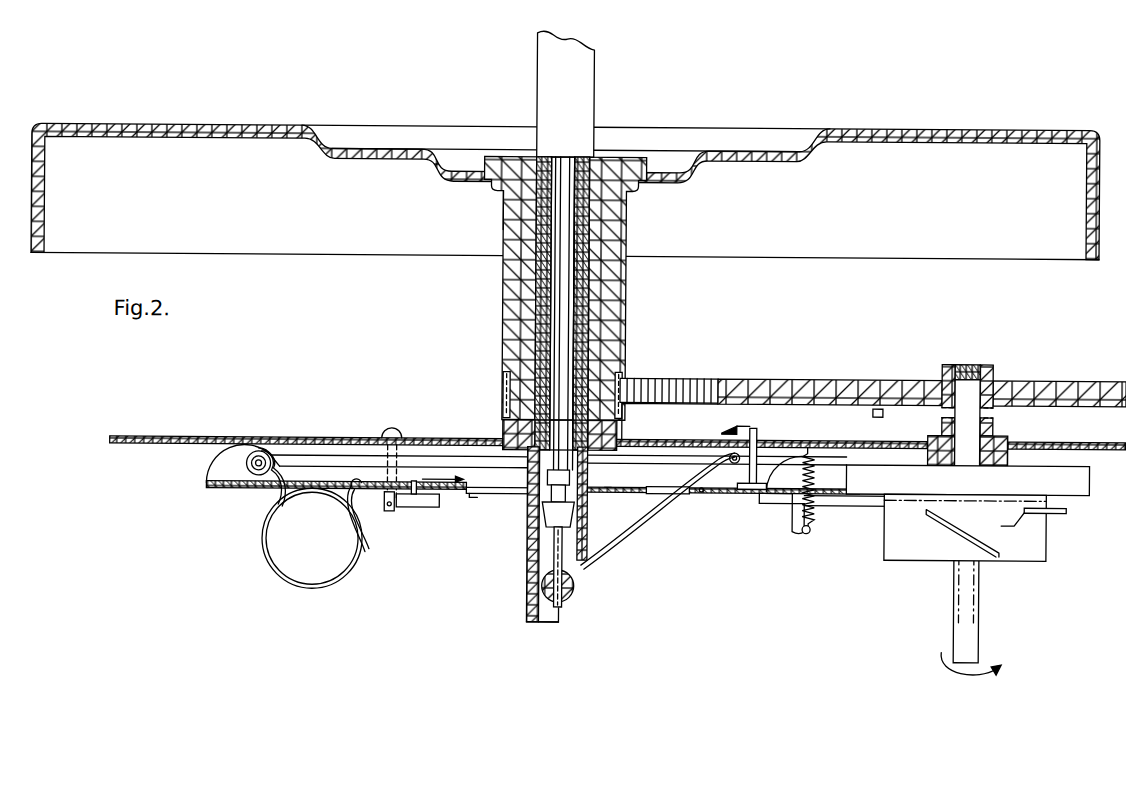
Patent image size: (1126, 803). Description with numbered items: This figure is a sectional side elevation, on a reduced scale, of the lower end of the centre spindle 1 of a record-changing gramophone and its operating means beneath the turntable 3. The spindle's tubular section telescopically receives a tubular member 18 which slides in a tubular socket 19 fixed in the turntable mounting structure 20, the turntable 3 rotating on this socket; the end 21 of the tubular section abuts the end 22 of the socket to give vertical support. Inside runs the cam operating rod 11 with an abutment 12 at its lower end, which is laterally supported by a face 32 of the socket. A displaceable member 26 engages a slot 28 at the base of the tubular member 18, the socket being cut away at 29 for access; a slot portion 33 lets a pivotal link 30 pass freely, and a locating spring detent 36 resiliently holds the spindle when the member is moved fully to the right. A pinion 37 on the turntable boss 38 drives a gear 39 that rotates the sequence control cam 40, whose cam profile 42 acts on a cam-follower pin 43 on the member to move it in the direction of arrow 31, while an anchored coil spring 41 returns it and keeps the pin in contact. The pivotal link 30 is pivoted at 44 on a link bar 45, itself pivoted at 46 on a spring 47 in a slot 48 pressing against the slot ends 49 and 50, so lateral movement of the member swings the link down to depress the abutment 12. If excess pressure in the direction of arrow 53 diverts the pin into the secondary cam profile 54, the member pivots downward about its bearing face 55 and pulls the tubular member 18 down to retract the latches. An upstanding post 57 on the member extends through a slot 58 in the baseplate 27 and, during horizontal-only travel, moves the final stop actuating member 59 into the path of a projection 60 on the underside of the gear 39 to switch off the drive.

The centre spindle 1 is at (530, 86).
The turntable 3 is at (397, 125).
The cam operating rod 11 is at (562, 272).
The abutment 12 is at (576, 586).
The tubular member 18 is at (578, 302).
The tubular socket 19 is at (583, 350).
The turntable mounting structure 20 is at (512, 430).
The end of tubular section 21 is at (537, 156).
The end of tubular socket 22 is at (539, 160).
The displaceable member 26 is at (452, 494).
The baseplate 27 is at (318, 438).
The slot 28 is at (578, 500).
The cut away portion 29 is at (530, 523).
The pivotal link 30 is at (652, 520).
The arrow 31 is at (682, 507).
The face 32 is at (541, 619).
The slot portion 33 is at (712, 480).
The locating spring detent 36 is at (489, 496).
The pinion 37 is at (504, 386).
The turntable boss 38 is at (512, 313).
The gear 39 is at (690, 380).
The sequence control cam 40 is at (1064, 524).
The anchored coil spring 41 is at (421, 508).
The cam profile 42 is at (896, 504).
The cam-follower pin 43 is at (828, 503).
The pivot 44 is at (741, 458).
The link bar 45 is at (656, 487).
The pivot 46 is at (256, 468).
The spring 47 is at (264, 534).
The slot 48 is at (312, 538).
The end of slot 49 is at (276, 489).
The opposite end of slot 50 is at (353, 491).
The arrow 53 is at (905, 485).
The secondary cam profile 54 is at (1020, 532).
The bearing face 55 is at (208, 464).
The upstanding post 57 is at (758, 440).
The slot 58 is at (733, 444).
The final stop actuating member 59 is at (740, 424).
The projection 60 is at (874, 413).